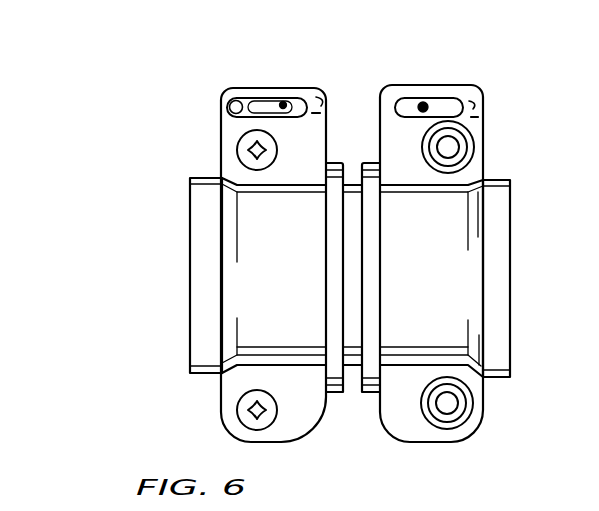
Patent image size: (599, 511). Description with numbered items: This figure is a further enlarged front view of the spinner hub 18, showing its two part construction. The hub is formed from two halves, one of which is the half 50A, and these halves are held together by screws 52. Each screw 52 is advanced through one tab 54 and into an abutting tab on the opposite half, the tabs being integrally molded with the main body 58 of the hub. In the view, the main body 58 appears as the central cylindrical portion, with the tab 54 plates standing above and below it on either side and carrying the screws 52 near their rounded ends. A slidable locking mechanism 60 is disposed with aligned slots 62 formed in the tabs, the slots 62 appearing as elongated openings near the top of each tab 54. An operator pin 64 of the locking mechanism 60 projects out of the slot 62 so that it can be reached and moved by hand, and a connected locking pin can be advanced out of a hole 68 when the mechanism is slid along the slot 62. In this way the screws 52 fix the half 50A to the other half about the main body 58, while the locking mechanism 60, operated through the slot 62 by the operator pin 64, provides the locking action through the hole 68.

The spinner hub 18 is at (120, 194).
The half 50A is at (204, 322).
The screws 52 is at (247, 150).
The tab 54 is at (309, 100).
The main body 58 is at (180, 246).
The slidable locking mechanism 60 is at (250, 93).
The slot 62 is at (288, 100).
The operator pin 64 is at (232, 107).
The hole 68 is at (326, 101).